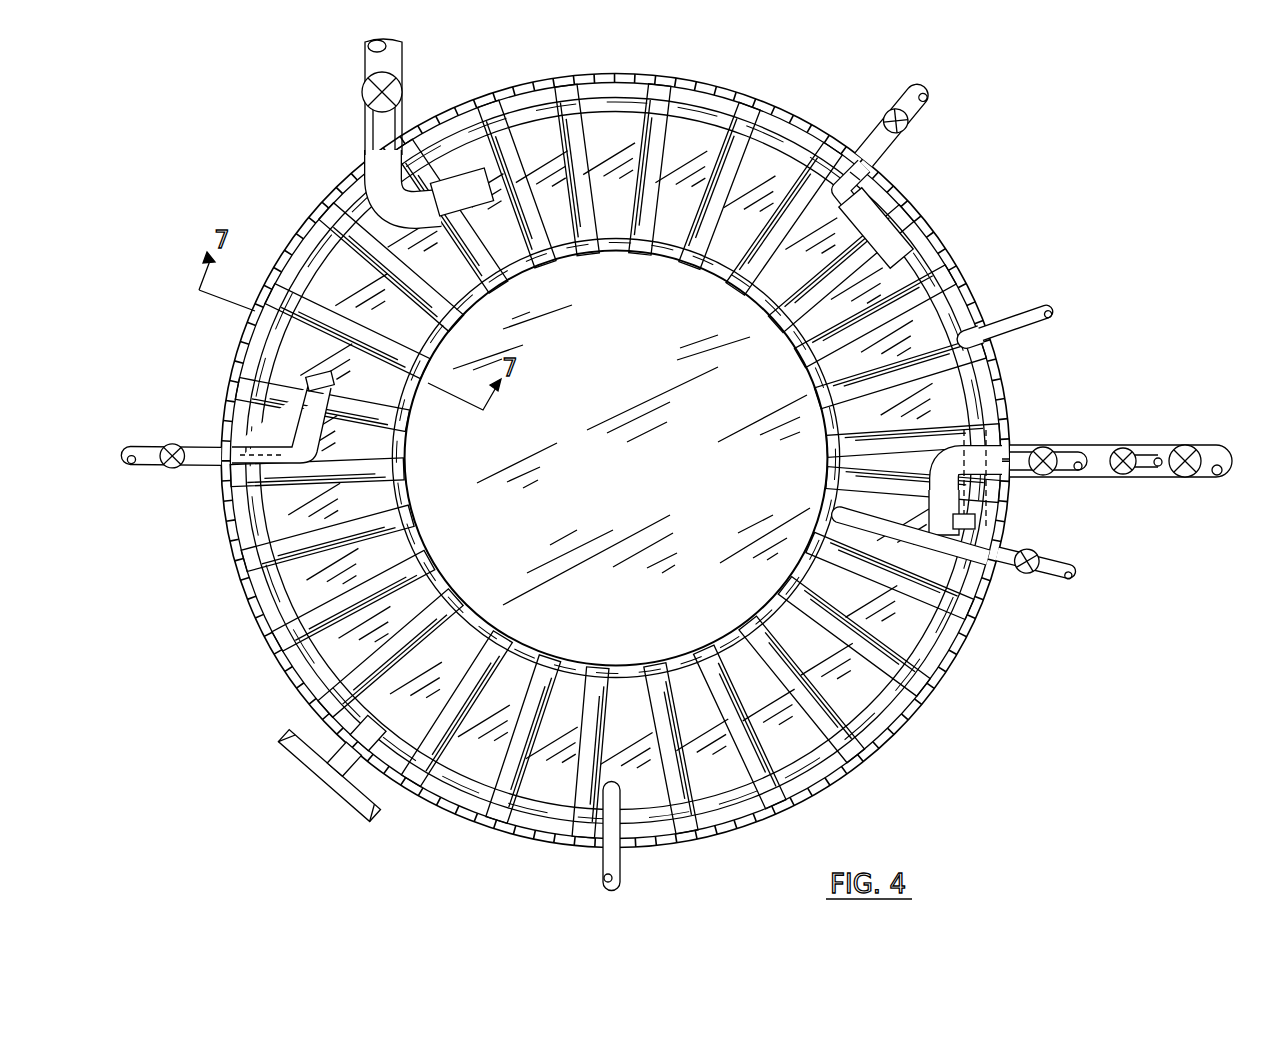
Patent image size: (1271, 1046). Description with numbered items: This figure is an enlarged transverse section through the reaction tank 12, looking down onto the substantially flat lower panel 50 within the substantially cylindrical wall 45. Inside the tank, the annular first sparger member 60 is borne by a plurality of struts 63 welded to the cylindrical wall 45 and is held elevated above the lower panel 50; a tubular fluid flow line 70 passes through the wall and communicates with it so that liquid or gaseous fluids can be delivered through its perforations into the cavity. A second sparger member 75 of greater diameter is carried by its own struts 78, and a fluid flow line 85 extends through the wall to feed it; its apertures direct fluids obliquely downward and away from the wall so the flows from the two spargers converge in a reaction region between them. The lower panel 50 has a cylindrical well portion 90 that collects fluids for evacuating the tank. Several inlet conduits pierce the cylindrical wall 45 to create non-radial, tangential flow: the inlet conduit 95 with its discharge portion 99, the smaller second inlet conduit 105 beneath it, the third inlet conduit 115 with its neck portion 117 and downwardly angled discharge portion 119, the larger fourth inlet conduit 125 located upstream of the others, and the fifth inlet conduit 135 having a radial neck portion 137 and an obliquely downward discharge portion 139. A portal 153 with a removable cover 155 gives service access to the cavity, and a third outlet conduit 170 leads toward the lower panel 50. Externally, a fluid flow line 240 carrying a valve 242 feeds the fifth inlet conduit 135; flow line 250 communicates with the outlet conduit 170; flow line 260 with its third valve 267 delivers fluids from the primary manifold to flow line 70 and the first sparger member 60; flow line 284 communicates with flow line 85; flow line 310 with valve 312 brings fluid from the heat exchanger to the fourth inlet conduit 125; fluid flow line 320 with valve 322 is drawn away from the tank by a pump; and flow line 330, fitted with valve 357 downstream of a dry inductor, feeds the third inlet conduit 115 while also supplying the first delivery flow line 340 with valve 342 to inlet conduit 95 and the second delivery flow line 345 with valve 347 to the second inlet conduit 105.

The reaction tank 12 is at (843, 790).
The cylindrical wall 45 is at (942, 228).
The lower panel 50 is at (600, 343).
The first sparger member 60 is at (768, 607).
The struts 63 is at (435, 595).
The fluid flow line 70 is at (862, 518).
The second sparger member 75 is at (737, 795).
The struts 78 is at (374, 722).
The fluid flow line 85 is at (965, 333).
The well portion 90 is at (952, 482).
The inlet conduit 95 is at (930, 478).
The discharge portion 99 is at (930, 522).
The second inlet conduit 105 is at (977, 524).
The third inlet conduit 115 is at (836, 212).
The neck portion 117 is at (854, 170).
The discharge portion 119 is at (876, 266).
The fourth inlet conduit 125 is at (407, 222).
The fifth inlet conduit 135 is at (322, 438).
The neck portion 137 is at (265, 468).
The discharge portion 139 is at (300, 390).
The portal 153 is at (384, 786).
The removable cover 155 is at (320, 782).
The third outlet conduit 170 is at (611, 805).
The fluid flow line 240 is at (200, 466).
The valve 242 is at (166, 445).
The flow line 250 is at (621, 861).
The flow line 260 is at (1058, 566).
The third valve 267 is at (1030, 575).
The flow line 284 is at (1040, 318).
The flow line 310 is at (366, 134).
The valve 312 is at (404, 86).
The fluid flow line 320 is at (1209, 476).
The valve 322 is at (1189, 446).
The flow line 330 is at (928, 103).
The first delivery flow line 340 is at (1058, 471).
The valve 342 is at (1046, 447).
The second delivery flow line 345 is at (1142, 469).
The valve 347 is at (1126, 448).
The valve 357 is at (912, 122).